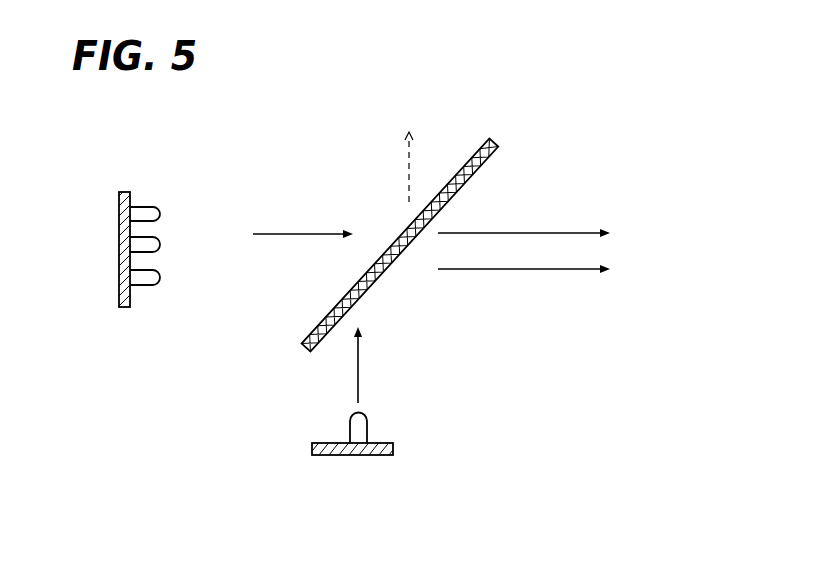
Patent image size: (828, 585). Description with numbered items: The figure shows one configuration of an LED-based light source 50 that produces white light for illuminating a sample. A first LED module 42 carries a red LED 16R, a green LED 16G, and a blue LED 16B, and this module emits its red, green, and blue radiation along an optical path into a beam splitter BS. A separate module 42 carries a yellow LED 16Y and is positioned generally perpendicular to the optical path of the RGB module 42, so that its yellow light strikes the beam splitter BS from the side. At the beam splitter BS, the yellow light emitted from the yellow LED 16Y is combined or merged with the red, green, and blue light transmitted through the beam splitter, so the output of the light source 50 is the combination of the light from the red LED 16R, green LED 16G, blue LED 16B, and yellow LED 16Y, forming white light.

The LED-based light source 50 is at (625, 144).
The LED module 42 is at (119, 222).
The red LED 16R is at (161, 214).
The green LED 16G is at (160, 245).
The blue LED 16B is at (154, 277).
The yellow LED 16Y is at (356, 425).
The beam splitter BS is at (302, 348).